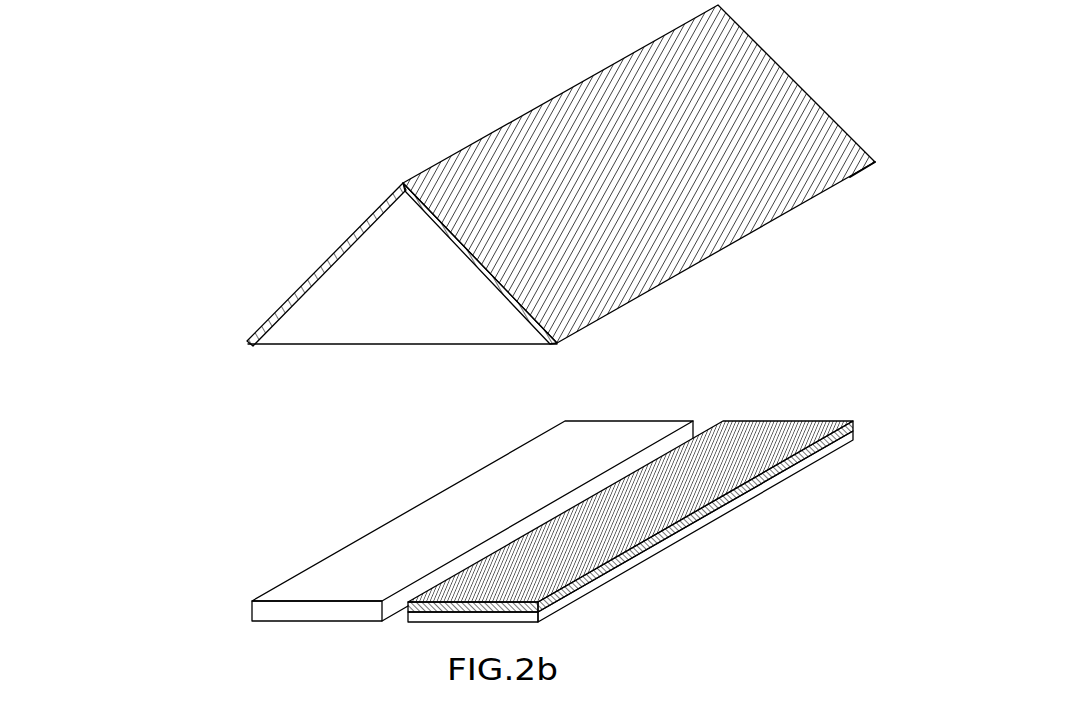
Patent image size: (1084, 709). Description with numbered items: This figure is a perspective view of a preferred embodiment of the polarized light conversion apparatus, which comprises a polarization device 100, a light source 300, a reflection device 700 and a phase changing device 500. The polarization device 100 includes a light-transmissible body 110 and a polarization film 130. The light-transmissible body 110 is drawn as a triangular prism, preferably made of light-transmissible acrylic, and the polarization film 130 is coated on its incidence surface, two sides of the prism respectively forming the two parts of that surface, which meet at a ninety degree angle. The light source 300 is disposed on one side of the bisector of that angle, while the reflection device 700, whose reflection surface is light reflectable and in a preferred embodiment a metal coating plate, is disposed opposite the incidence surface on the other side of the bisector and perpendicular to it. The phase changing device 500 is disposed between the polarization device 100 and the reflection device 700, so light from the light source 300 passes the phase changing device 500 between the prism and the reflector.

The polarization device 100 is at (153, 207).
The light-transmissible body 110 is at (310, 333).
The polarization film 130 is at (308, 277).
The light source 300 is at (373, 558).
The phase changing device 500 is at (780, 433).
The reflection device 700 is at (780, 477).